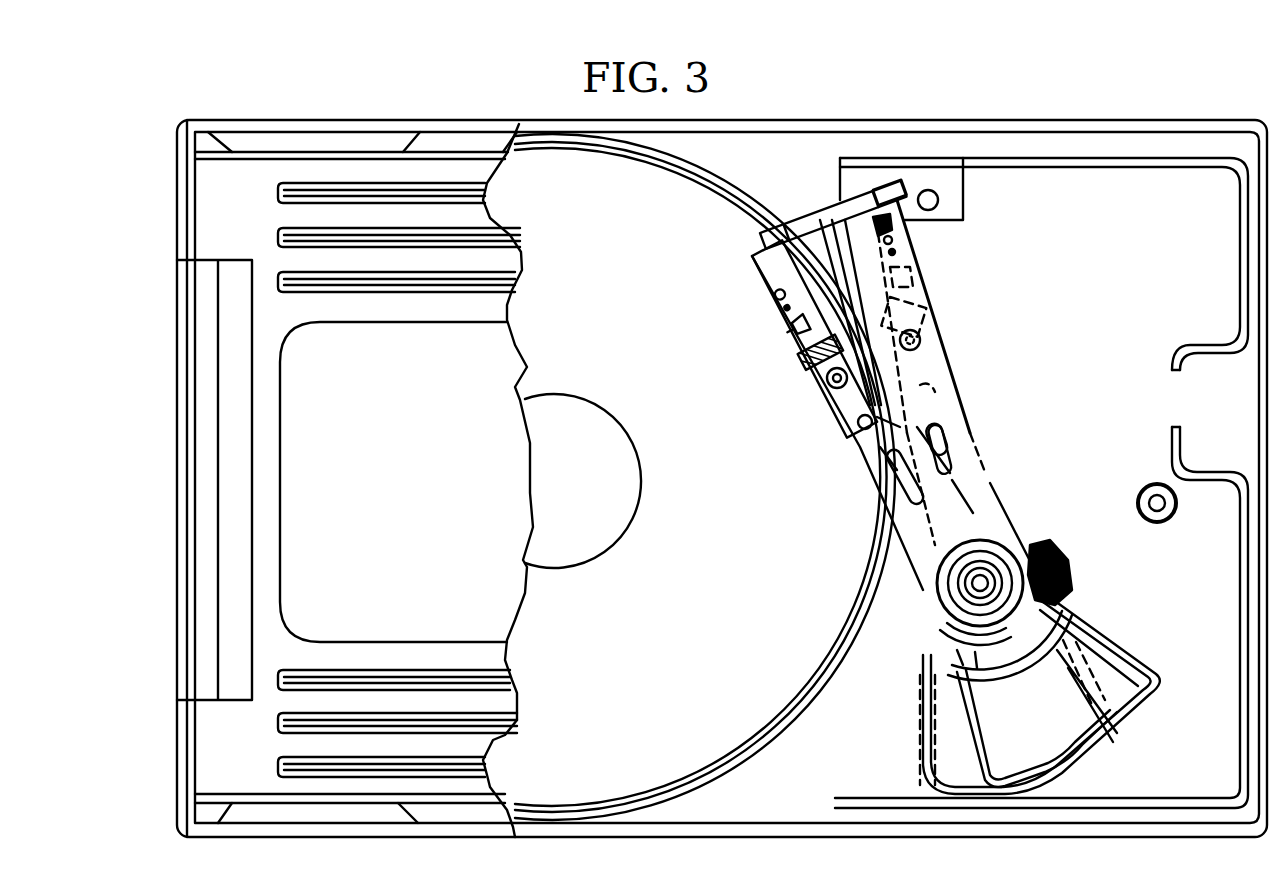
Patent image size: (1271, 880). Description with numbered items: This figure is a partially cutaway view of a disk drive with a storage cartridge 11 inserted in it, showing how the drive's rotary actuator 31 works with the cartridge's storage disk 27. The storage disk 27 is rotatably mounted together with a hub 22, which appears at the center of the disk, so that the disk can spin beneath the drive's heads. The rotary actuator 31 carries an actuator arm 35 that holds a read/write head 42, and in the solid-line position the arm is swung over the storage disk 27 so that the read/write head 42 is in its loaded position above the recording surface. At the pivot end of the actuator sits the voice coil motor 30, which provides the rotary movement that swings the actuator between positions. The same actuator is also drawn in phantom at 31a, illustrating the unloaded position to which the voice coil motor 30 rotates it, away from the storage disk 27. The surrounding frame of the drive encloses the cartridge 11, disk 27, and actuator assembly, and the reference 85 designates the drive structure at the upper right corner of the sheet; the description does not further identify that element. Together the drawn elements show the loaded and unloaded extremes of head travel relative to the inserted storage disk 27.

The data storage cartridge 11 is at (246, 190).
The cover wall 85 is at (1084, 100).
The storage disk 27 is at (684, 584).
The hub 22 is at (547, 400).
The read/write head 42 is at (755, 250).
The actuator arm 35 is at (845, 410).
The rotary actuator 31 is at (905, 513).
The rotary actuator in unloaded position 31a is at (985, 428).
The voice coil motor 30 is at (1003, 483).